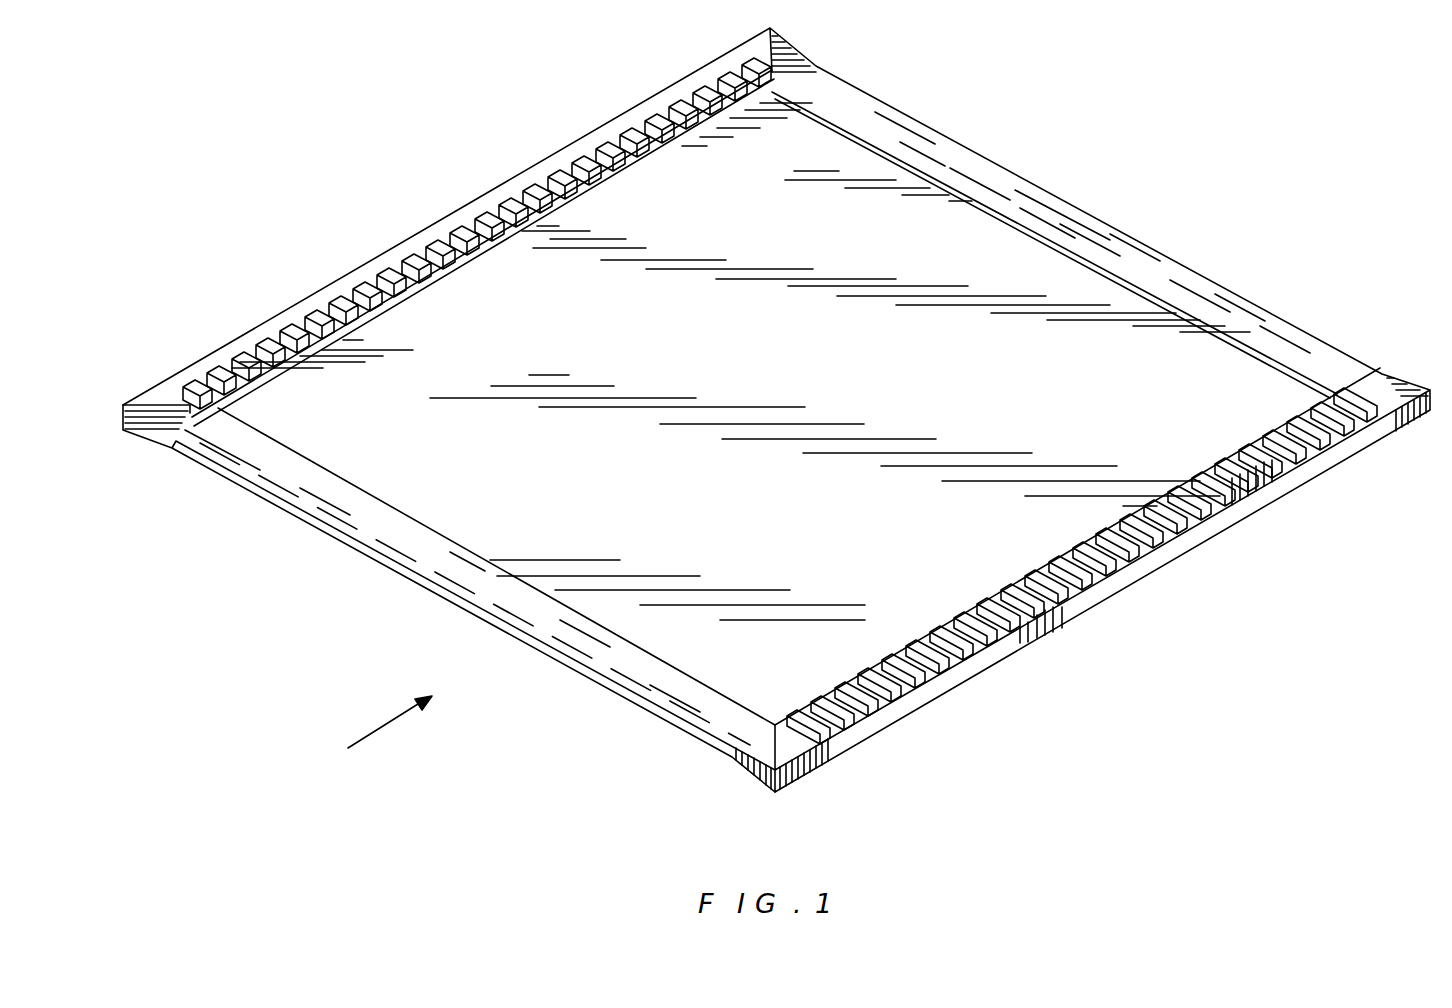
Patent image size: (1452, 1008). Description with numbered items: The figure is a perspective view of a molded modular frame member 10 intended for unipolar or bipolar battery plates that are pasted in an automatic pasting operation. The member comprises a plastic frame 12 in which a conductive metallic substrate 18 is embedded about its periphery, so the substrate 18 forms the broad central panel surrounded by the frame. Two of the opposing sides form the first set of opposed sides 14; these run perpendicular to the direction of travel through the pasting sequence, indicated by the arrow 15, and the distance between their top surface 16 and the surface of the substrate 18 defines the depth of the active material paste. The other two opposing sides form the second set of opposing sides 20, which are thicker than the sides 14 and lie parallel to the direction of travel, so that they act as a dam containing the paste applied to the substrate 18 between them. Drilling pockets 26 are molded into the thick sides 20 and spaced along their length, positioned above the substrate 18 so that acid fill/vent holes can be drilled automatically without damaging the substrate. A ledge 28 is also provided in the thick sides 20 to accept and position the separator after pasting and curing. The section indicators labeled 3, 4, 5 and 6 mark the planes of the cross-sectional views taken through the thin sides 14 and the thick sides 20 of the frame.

The molded modular frame member 10 is at (417, 107).
The plastic frame 12 is at (1395, 380).
The first set of opposed sides 14 is at (996, 172).
The arrow 15 is at (388, 722).
The top surface 16 is at (333, 515).
The conductive substrate 18 is at (806, 534).
The second set of opposing sides 20 is at (585, 145).
The drilling pockets 26 is at (752, 102).
The ledge 28 is at (728, 95).
The section line 3- 3 is at (450, 203).
The section line 4- 4 is at (427, 593).
The section line 5- 5 is at (1307, 283).
The section line 6- 6 is at (837, 638).